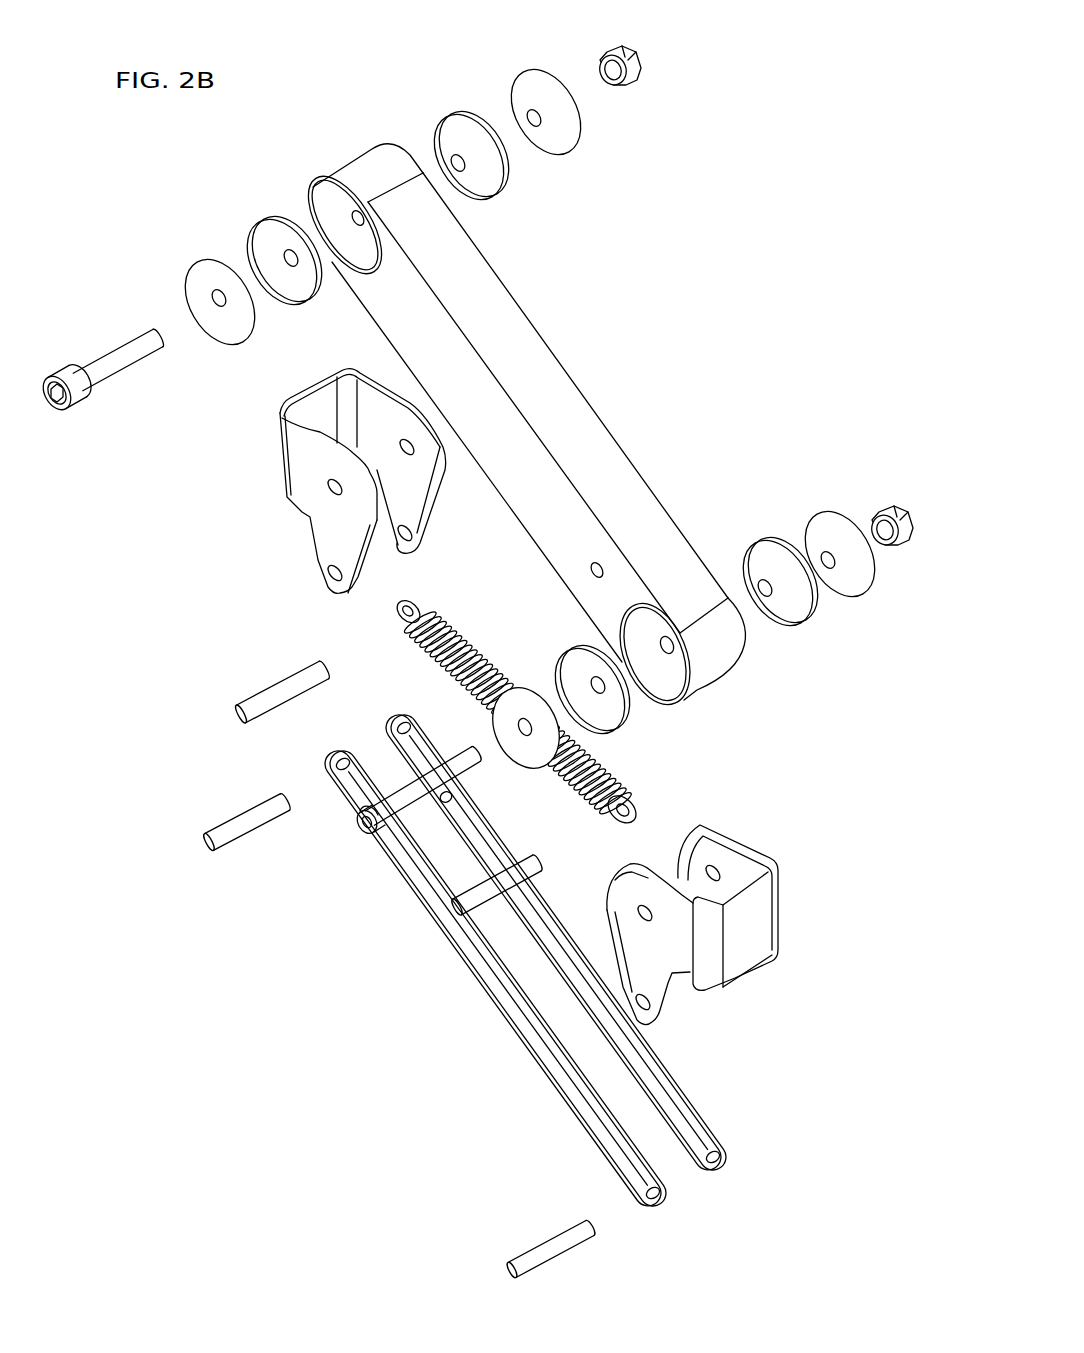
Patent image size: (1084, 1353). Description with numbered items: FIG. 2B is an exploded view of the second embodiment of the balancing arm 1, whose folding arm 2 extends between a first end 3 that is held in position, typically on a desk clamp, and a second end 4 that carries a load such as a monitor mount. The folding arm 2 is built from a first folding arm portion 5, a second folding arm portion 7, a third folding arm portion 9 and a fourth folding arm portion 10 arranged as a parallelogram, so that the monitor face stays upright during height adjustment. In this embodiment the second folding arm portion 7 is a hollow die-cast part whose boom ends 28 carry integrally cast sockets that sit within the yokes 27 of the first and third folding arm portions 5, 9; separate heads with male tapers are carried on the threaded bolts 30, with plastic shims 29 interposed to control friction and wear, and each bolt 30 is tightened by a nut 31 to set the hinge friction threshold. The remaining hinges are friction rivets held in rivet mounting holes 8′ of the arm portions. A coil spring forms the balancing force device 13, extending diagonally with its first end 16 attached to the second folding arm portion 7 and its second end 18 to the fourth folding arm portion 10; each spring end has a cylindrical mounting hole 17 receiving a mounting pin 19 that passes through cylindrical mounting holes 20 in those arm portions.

The balancing arm 1 is at (836, 151).
The folding arm 2 is at (862, 784).
The first end 3 is at (733, 930).
The second end 4 is at (309, 461).
The first folding arm portion 5 is at (642, 950).
The second folding arm portion 7 is at (540, 380).
The rivet mounting holes 8′ is at (397, 548).
The third folding arm portion 9 is at (343, 527).
The fourth folding arm portion 10 is at (478, 952).
The balancing force device 13 is at (445, 665).
The first end of the coil spring 16 is at (600, 803).
The cylindrical mounting hole 17 is at (400, 620).
The second end of the coil spring 18 is at (420, 611).
The mounting pins 19 is at (238, 708).
The cylindrical mounting holes 20 is at (590, 574).
The yoke 27 is at (540, 633).
The boom end 28 is at (544, 413).
The shim 29 is at (268, 245).
The threaded bolt 30 is at (137, 345).
The nut 31 is at (608, 54).